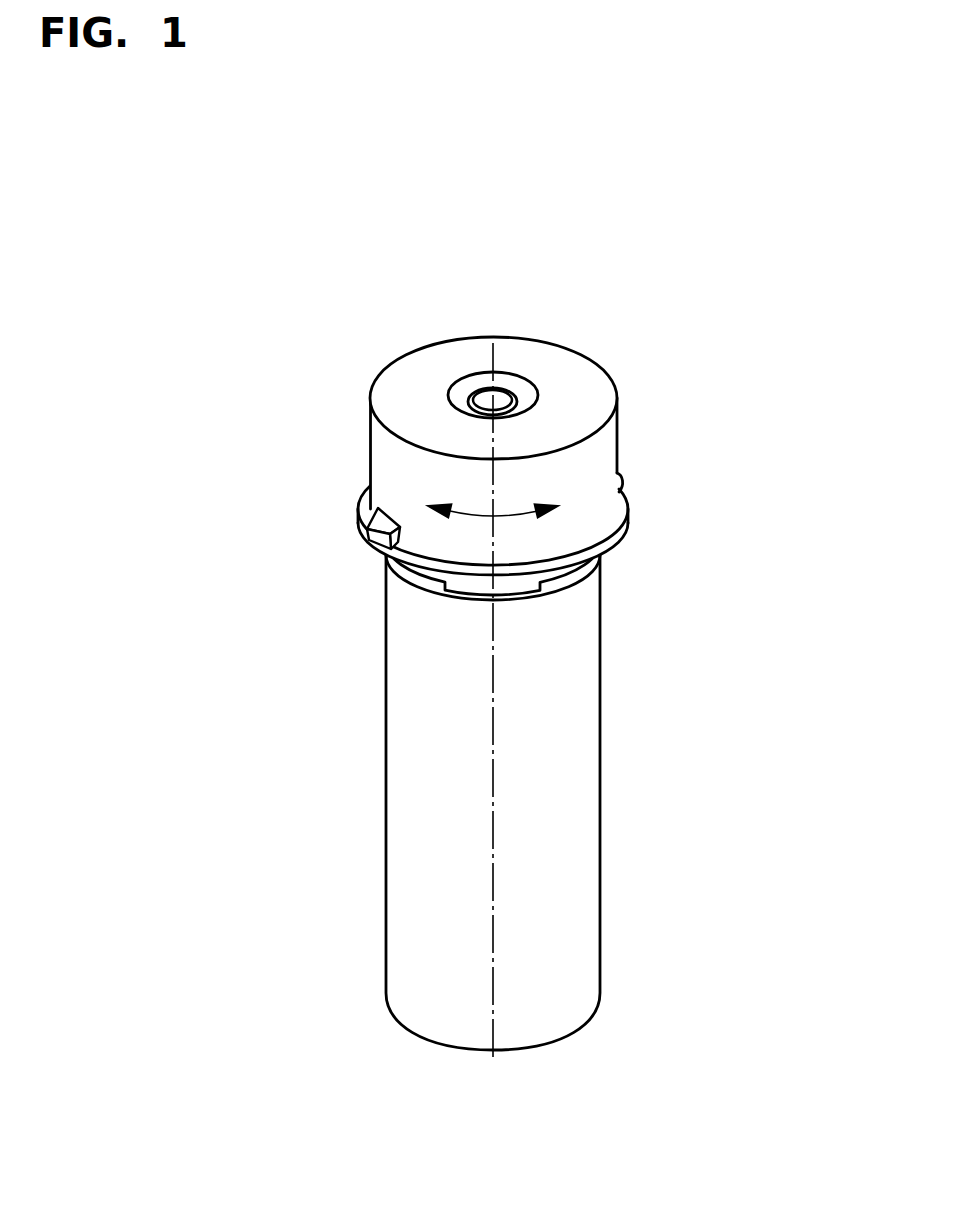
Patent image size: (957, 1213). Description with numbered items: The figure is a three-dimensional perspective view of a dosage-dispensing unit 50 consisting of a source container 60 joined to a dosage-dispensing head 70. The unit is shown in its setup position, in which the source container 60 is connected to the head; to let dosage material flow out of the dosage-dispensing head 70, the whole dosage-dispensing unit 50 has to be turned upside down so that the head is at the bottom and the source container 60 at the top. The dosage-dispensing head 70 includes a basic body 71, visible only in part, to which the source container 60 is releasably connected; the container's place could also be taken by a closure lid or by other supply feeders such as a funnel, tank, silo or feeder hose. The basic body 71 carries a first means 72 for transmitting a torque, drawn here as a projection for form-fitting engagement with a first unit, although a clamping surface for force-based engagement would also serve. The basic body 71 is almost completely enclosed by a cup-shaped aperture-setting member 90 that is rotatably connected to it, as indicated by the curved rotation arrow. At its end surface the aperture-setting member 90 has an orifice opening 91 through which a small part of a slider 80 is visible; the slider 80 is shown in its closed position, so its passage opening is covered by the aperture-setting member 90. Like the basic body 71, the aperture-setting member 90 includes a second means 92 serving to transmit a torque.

The dosage-dispensing unit 50 is at (518, 596).
The source container 60 is at (521, 779).
The dosage-dispensing head 70 is at (517, 596).
The basic body 71 is at (607, 538).
The first means for transmitting a torque 72 is at (540, 595).
The slider 80 is at (500, 405).
The aperture-setting member 90 is at (412, 403).
The orifice opening 91 is at (472, 385).
The second means for transmitting a torque 92 is at (385, 527).